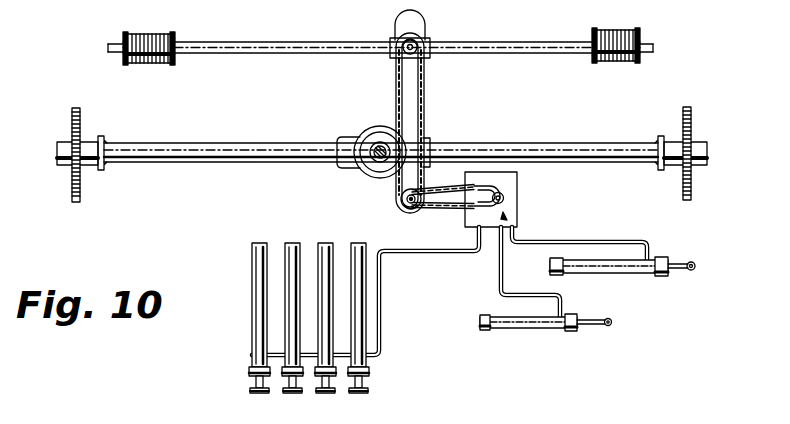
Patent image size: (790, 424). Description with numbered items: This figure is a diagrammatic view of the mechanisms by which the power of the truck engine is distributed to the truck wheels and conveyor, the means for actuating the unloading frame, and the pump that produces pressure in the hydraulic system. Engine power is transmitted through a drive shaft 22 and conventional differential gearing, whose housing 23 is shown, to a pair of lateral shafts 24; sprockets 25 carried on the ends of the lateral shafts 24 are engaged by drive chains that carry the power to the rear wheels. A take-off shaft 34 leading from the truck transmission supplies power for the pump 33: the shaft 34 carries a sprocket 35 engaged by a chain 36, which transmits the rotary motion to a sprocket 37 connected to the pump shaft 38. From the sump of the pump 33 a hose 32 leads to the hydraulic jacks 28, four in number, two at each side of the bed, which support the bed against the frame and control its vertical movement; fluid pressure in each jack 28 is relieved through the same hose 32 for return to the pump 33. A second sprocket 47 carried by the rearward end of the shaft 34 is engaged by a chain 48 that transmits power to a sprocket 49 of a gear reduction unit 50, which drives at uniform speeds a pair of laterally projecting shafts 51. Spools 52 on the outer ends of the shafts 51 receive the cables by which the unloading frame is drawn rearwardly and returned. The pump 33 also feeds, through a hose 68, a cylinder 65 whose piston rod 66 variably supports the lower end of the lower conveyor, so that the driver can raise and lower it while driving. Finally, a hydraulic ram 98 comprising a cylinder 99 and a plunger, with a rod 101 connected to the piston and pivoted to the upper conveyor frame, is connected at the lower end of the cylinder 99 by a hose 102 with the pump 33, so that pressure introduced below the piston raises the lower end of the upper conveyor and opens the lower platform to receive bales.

The drive shaft 22 is at (376, 146).
The differential gearing housing 23 is at (354, 165).
The lateral shafts 24 is at (604, 146).
The sprockets 25 is at (84, 171).
The hydraulic jacks 28 is at (288, 318).
The hose 32 is at (383, 320).
The pump 33 is at (518, 216).
The shaft 34 is at (405, 201).
The sprocket 35 is at (414, 209).
The chain 36 is at (443, 210).
The sprocket 37 is at (477, 189).
The pump shaft 38 is at (504, 198).
The second sprocket 47 is at (418, 192).
The chain 48 is at (424, 103).
The sprocket 49 is at (426, 47).
The gear reduction unit 50 is at (423, 29).
The laterally projecting shafts 51 is at (318, 50).
The spools 52 is at (176, 38).
The cylinder 65 is at (521, 329).
The rod 66 is at (606, 328).
The hose 68 is at (483, 300).
The hydraulic ram 98 is at (609, 276).
The cylinder 99 is at (606, 273).
The rod 101 is at (683, 263).
The hose 102 is at (624, 242).